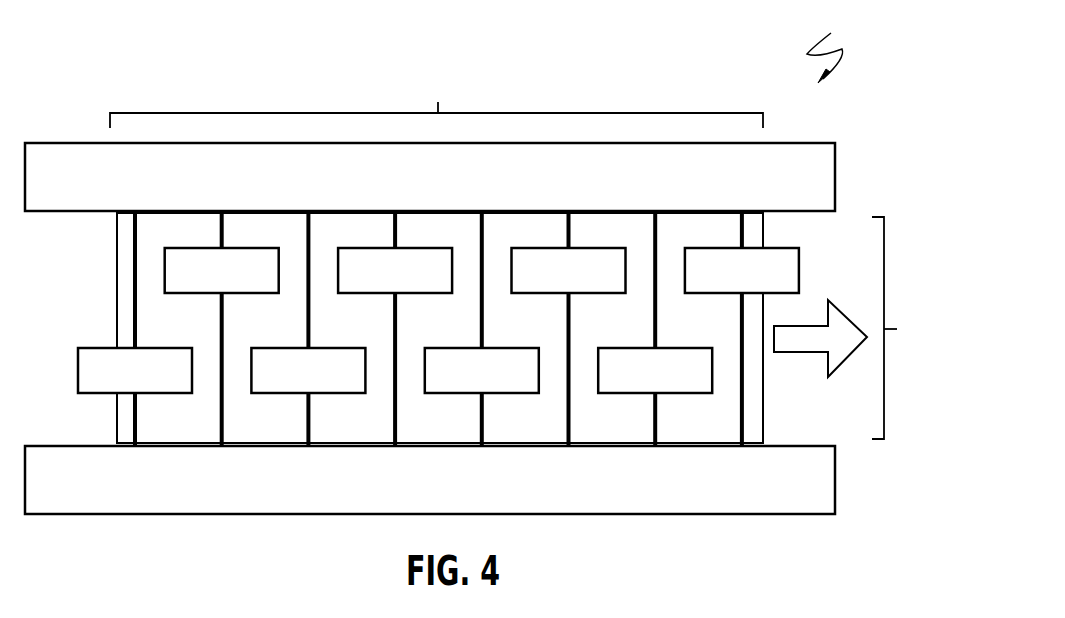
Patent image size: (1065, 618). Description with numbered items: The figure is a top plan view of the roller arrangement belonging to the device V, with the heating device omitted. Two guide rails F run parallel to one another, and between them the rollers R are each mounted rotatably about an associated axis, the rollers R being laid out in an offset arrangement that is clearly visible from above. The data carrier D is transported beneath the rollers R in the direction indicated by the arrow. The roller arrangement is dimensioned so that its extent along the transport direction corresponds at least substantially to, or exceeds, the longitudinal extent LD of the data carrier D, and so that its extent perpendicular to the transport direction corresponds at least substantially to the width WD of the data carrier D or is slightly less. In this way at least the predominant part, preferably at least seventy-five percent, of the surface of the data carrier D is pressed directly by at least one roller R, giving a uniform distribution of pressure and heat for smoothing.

The guide rail F is at (422, 190).
The data carrier D is at (117, 310).
The roller R is at (438, 320).
The longitudinal extent of the data carrier LD is at (436, 90).
The width of the data carrier WD is at (857, 328).
The device V is at (825, 47).